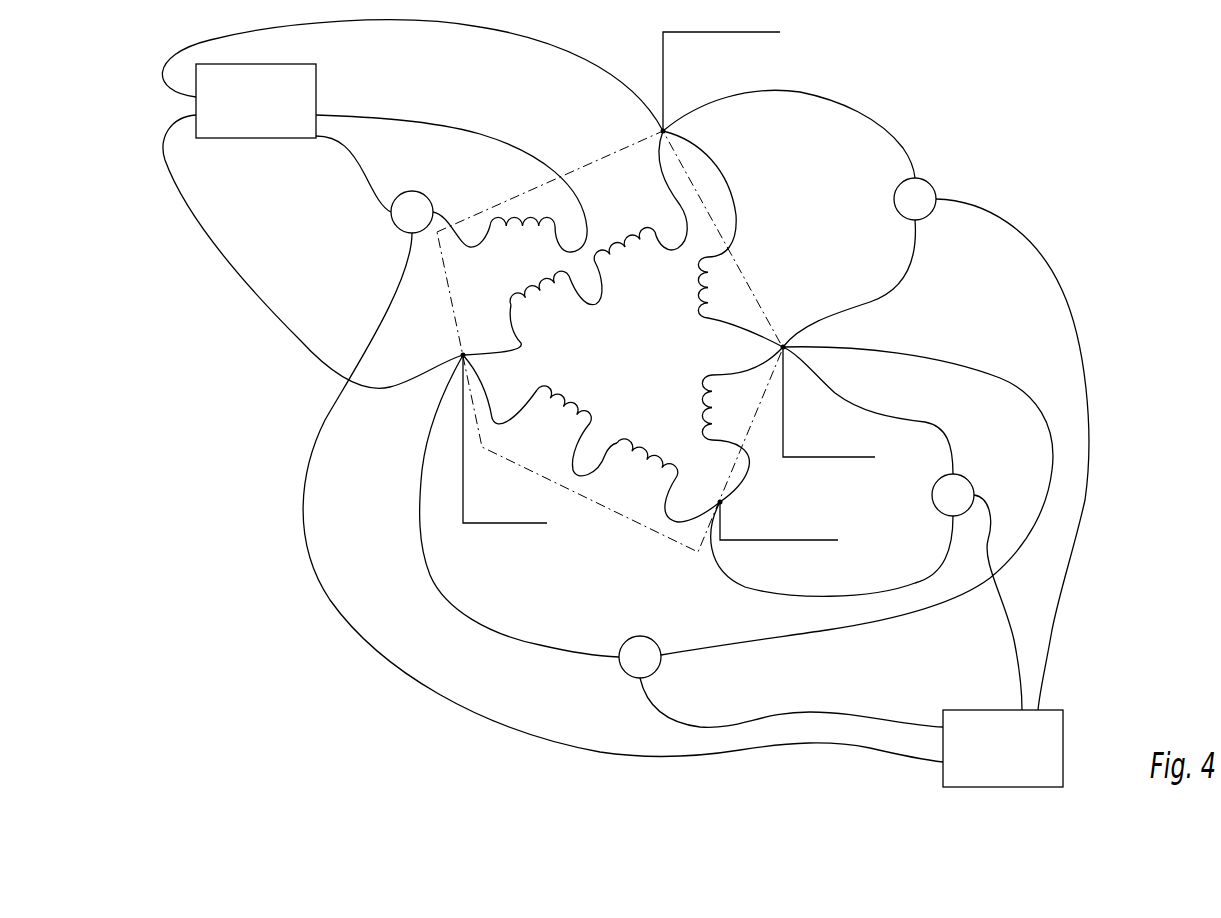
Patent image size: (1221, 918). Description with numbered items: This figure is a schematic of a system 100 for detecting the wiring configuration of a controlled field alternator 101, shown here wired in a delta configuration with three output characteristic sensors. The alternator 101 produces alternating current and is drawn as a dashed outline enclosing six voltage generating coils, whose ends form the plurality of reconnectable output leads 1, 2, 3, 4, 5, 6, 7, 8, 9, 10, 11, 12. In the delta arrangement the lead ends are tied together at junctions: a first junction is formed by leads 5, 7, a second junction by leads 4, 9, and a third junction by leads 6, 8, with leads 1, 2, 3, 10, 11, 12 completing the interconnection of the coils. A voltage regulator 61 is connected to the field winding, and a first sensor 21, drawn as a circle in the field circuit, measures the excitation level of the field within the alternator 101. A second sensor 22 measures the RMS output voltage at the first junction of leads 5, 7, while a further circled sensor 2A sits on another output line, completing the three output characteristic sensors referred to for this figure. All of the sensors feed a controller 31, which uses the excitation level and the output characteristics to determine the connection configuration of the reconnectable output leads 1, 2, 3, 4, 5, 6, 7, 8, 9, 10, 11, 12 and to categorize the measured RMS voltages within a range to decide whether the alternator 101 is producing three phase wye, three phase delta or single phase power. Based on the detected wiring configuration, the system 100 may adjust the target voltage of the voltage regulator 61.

The reconnectable output lead 1 is at (742, 377).
The reconnectable output lead 2 is at (597, 272).
The reconnectable output lead 3 is at (591, 437).
The reconnectable output lead 4 is at (725, 455).
The reconnectable output lead 5 is at (654, 190).
The reconnectable output lead 6 is at (515, 389).
The reconnectable output lead 7 is at (699, 209).
The reconnectable output lead 8 is at (501, 319).
The reconnectable output lead 9 is at (683, 487).
The reconnectable output lead 10 is at (740, 318).
The reconnectable output lead 11 is at (563, 279).
The reconnectable output lead 12 is at (623, 445).
The first sensor 21 is at (412, 191).
The second sensor 22 is at (894, 199).
The rectifier element 2A is at (640, 636).
The controller 31 is at (995, 710).
The voltage regulator 61 is at (316, 68).
The system 100 is at (1019, 68).
The controlled field alternator 101 is at (744, 276).